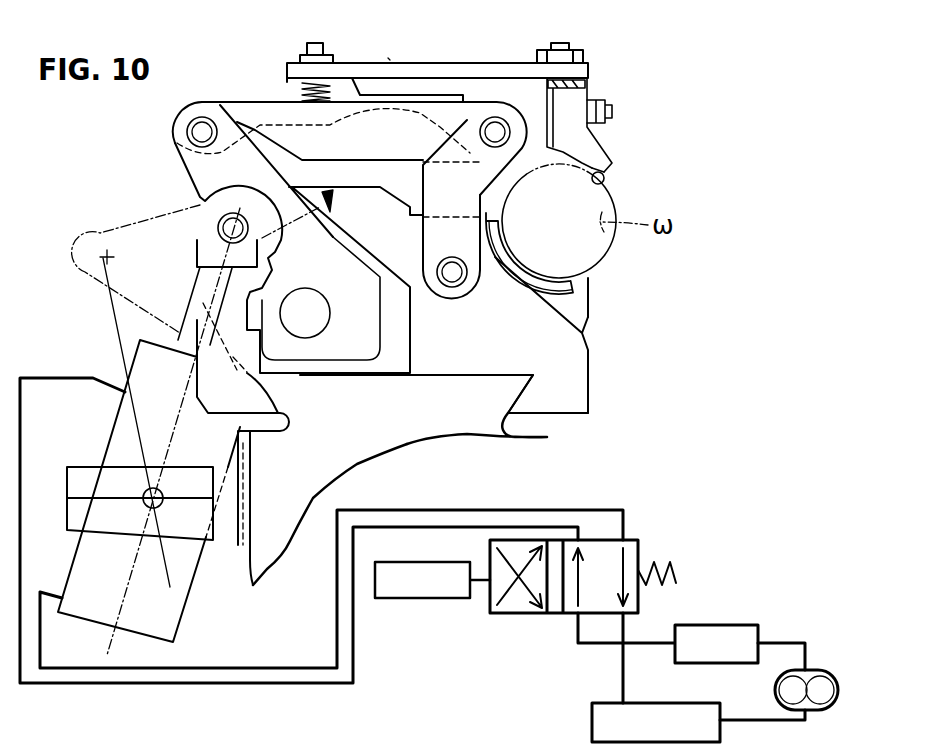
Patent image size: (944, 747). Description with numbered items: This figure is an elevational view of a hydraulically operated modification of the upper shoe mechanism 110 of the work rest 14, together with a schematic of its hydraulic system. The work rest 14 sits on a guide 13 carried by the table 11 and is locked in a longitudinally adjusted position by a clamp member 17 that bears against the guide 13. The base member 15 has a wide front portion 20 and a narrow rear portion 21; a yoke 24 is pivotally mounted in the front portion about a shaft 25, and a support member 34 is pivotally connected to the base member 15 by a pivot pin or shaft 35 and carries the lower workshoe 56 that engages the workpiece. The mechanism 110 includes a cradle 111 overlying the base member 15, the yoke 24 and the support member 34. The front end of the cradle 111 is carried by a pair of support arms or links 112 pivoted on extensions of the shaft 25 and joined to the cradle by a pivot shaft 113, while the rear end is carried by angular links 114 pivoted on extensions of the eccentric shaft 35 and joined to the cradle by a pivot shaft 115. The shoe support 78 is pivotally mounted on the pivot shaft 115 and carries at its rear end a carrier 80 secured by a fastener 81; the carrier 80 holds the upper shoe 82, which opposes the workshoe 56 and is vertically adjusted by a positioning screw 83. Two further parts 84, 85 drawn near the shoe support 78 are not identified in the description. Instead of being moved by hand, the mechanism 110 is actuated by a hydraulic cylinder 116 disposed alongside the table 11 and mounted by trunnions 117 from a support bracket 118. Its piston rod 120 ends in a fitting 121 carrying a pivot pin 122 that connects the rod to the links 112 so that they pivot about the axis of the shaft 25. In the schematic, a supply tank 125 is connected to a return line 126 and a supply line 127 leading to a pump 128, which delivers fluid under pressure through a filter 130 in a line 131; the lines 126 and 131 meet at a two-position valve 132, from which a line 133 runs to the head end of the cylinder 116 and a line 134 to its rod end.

The table 11 is at (363, 450).
The guide 13 is at (433, 398).
The work rest 14 is at (608, 367).
The base member 15 is at (572, 391).
The clamp member 17 is at (253, 400).
The front portion 20 is at (392, 360).
The rear portion 21 is at (505, 353).
The yoke 24 is at (329, 212).
The shaft 25 is at (317, 307).
The support member 34 is at (571, 309).
The pivot pin 35 is at (455, 272).
The workshoe 56 is at (600, 286).
The shoe support 78 is at (460, 65).
The carrier 80 is at (588, 95).
The fastener 81 is at (608, 110).
The upper shoe 82 is at (606, 179).
The positioning screw 83 is at (575, 48).
The bolt 84 is at (318, 48).
The spring 85 is at (293, 97).
The upper shoe mechanism 110 is at (392, 52).
The cradle 111 is at (238, 106).
The support arms 112 is at (205, 172).
The pivot shaft 113 is at (202, 130).
The support arms 114 is at (433, 233).
The pivot shaft 115 is at (495, 130).
The hydraulic cylinder 116 is at (172, 587).
The trunnions 117 is at (160, 490).
The support bracket 118 is at (127, 527).
The piston rod 120 is at (212, 287).
The fitting 121 is at (212, 222).
The pivot pin 122 is at (225, 237).
The supply tank 125 is at (590, 713).
The return line 126 is at (623, 669).
The supply line 127 is at (740, 721).
The pump 128 is at (830, 670).
The filter 130 is at (742, 625).
The line 131 is at (793, 643).
The two-position valve 132 is at (530, 617).
The line 133 is at (252, 667).
The line 134 is at (283, 687).